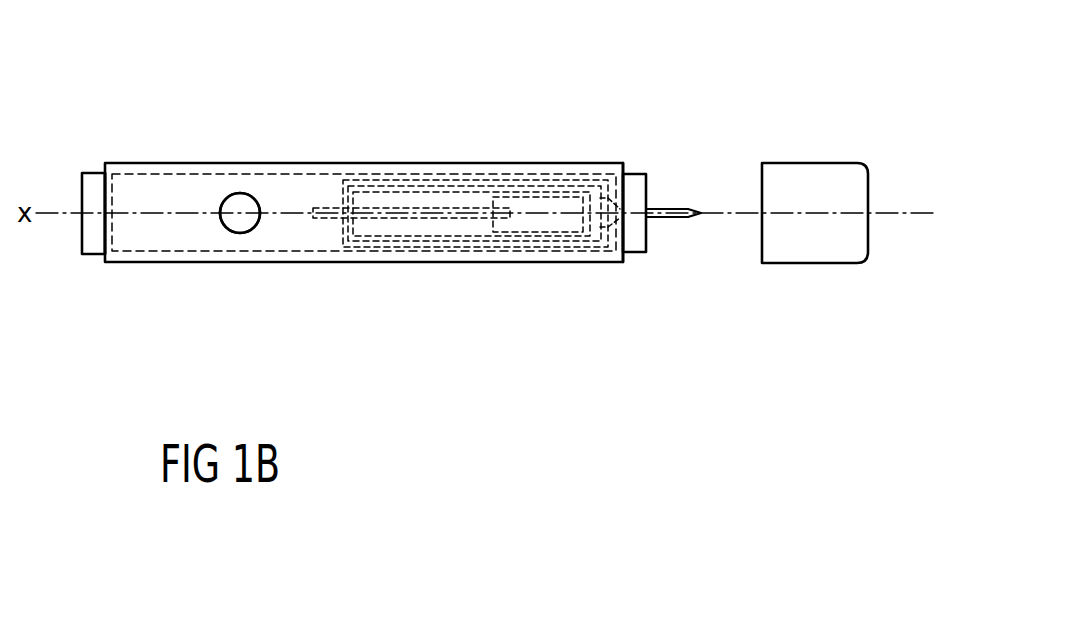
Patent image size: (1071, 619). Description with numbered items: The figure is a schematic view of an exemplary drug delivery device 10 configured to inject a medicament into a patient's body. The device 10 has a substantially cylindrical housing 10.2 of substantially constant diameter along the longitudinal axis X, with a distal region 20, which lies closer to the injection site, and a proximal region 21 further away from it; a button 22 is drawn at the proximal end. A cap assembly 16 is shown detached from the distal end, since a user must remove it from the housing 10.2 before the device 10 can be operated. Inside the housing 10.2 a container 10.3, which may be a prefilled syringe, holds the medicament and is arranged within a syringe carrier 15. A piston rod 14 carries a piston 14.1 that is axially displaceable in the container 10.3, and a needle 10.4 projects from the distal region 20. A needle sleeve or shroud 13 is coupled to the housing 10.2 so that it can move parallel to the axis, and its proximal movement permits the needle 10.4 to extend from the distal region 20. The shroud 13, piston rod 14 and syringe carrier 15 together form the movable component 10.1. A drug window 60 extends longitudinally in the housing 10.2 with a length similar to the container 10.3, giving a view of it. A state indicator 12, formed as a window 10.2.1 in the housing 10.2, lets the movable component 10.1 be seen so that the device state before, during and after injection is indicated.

The drug delivery device 10 is at (589, 131).
The movable component 10.1 is at (362, 349).
The housing 10.2 is at (453, 163).
The window 10.2.1 is at (224, 228).
The container 10.3 is at (350, 180).
The needle 10.4 is at (683, 218).
The state indicator 12 is at (232, 193).
The needle shroud 13 is at (640, 174).
The piston rod 14 is at (333, 218).
The piston 14.1 is at (502, 232).
The syringe carrier 15 is at (362, 247).
The cap assembly 16 is at (820, 175).
The distal region 20 is at (612, 262).
The proximal region 21 is at (117, 173).
The button 22 is at (93, 173).
The drug window 60 is at (513, 174).